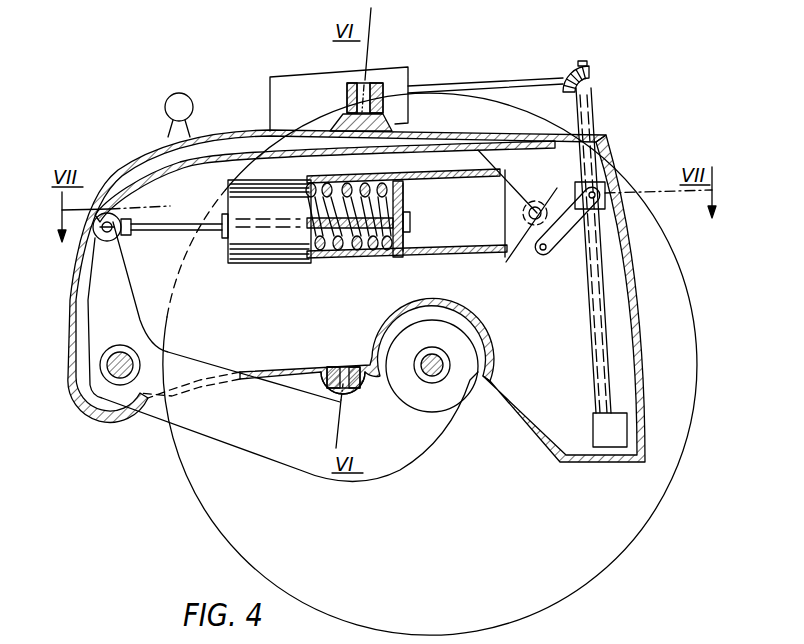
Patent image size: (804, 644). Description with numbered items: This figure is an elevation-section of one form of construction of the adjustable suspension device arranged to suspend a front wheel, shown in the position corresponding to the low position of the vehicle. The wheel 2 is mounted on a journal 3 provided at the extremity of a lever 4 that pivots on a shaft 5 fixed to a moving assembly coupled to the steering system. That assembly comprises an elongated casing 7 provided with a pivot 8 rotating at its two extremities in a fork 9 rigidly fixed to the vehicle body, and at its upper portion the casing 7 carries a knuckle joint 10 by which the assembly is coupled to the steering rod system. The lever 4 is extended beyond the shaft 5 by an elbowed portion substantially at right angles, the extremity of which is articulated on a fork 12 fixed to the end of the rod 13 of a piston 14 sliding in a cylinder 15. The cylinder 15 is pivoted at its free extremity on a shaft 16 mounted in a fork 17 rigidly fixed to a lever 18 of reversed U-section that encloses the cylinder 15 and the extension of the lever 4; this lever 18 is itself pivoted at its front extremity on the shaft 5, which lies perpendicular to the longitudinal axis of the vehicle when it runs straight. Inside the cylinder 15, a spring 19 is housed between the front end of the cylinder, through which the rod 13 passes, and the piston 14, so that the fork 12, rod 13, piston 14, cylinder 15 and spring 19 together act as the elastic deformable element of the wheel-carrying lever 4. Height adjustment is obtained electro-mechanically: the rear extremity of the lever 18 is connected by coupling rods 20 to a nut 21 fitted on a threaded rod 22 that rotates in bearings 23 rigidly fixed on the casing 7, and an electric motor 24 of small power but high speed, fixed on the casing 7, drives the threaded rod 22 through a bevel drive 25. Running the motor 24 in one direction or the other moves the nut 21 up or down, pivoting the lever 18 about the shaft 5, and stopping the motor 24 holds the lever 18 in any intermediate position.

The wheel 2 is at (690, 453).
The journal 3 is at (423, 378).
The lever 4 is at (222, 385).
The shaft 5 is at (115, 372).
The casing 7 is at (123, 147).
The pivot 8 is at (340, 387).
The fork 9 is at (350, 83).
The knuckle joint 10 is at (210, 96).
The fork 12 is at (115, 213).
The rod 13 is at (171, 224).
The piston 14 is at (401, 203).
The cylinder 15 is at (497, 252).
The shaft 16 is at (526, 214).
The fork 17 is at (570, 175).
The lever 18 is at (470, 147).
The spring 19 is at (382, 177).
The coupling rods 20 is at (569, 246).
The nut 21 is at (607, 191).
The threaded rod 22 is at (610, 306).
The bearings 23 is at (620, 428).
The electric motor 24 is at (395, 47).
The bevel drive 25 is at (576, 63).